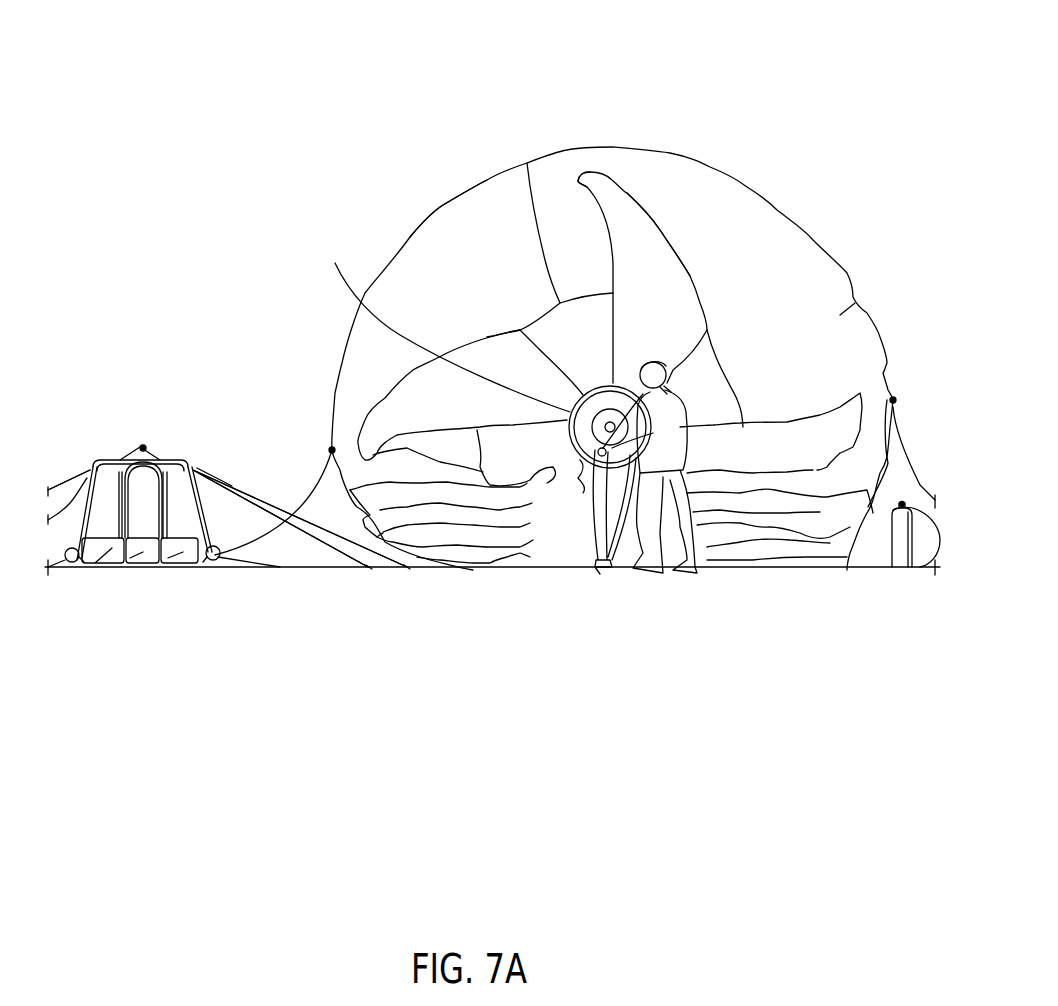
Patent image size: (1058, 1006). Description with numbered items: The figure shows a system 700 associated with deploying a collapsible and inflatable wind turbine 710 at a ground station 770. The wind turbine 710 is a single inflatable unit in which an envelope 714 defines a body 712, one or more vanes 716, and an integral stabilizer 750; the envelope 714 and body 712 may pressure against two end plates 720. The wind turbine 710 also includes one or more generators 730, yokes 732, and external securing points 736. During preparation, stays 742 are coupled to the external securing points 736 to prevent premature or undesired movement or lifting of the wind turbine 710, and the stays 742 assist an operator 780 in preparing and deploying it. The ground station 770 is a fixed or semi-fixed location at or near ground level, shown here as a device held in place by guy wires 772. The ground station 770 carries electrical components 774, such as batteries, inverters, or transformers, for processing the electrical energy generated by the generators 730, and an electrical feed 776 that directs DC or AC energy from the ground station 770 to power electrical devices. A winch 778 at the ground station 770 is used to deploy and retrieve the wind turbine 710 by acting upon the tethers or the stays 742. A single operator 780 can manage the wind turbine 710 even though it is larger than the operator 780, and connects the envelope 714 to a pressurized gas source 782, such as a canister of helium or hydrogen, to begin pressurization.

The system 700 is at (268, 50).
The wind turbine 710 is at (378, 165).
The body 712 is at (538, 148).
The envelope 714 is at (714, 198).
The vanes 716 is at (620, 183).
The end plates 720 is at (445, 325).
The generators 730 is at (590, 443).
The yokes 732 is at (600, 557).
The external securing points 736 is at (329, 450).
The stays 742 is at (407, 455).
The integral stabilizer 750 is at (443, 203).
The ground station 770 is at (123, 418).
The guy wires 772 is at (337, 460).
The electrical components 774 is at (112, 553).
The electrical feed 776 is at (73, 500).
The winch 778 is at (146, 447).
The operator 780 is at (662, 580).
The pressurized gas source 782 is at (897, 527).